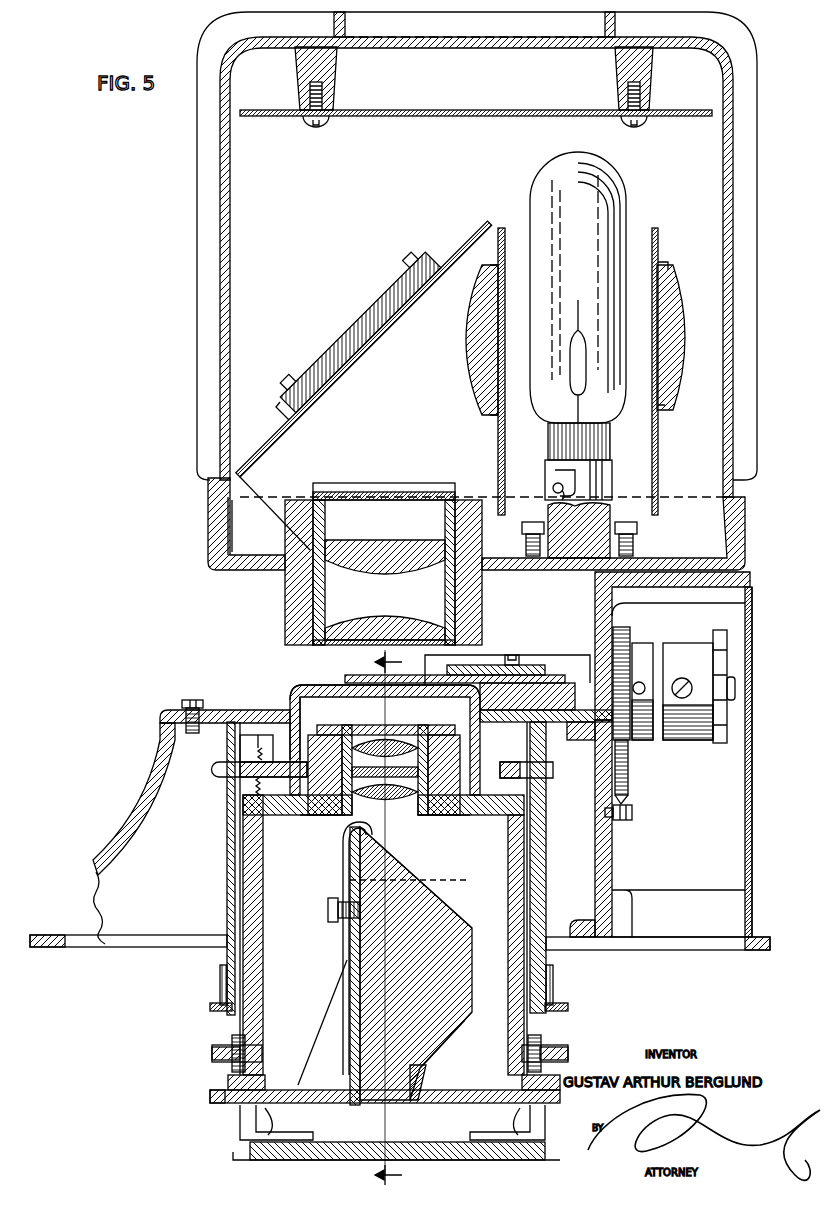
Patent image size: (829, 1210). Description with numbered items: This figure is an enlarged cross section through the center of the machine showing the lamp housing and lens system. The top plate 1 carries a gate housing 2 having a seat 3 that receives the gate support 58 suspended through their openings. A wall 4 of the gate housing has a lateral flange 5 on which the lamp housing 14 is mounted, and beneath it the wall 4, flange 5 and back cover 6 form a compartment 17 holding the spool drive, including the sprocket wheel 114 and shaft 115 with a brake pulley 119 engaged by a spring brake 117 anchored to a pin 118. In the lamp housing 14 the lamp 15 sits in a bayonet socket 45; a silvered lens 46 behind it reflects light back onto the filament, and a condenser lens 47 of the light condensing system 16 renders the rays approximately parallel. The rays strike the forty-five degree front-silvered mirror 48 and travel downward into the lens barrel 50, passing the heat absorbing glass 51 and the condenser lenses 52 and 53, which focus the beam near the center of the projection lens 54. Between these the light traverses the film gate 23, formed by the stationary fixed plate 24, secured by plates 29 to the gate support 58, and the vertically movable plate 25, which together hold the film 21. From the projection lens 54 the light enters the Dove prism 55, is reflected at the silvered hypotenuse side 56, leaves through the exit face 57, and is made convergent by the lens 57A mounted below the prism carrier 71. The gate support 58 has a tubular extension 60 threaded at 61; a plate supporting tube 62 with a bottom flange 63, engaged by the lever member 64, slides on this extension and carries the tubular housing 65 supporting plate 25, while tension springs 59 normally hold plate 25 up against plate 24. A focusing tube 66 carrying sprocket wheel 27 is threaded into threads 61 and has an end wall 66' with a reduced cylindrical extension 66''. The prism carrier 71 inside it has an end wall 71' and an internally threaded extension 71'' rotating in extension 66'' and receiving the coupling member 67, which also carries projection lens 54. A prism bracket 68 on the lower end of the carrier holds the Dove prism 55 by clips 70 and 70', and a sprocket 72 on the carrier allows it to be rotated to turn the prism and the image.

The top plate 1 is at (52, 935).
The gate housing 2 is at (160, 749).
The seat 3 is at (212, 706).
The wall 4 is at (605, 866).
The lateral flange 5 is at (706, 580).
The cover 6 is at (768, 765).
The lamp housing 14 is at (207, 243).
The lamp 15 is at (615, 192).
The light condensing system 16 is at (380, 280).
The compartment 17 is at (742, 830).
The film 21 is at (336, 676).
The film gate 23 is at (300, 672).
The stationary fixed plate 24 is at (455, 664).
The vertically movable plate 25 is at (345, 688).
The sprocket wheel 27 is at (210, 1053).
The plates 29 is at (570, 668).
The bayonet socket 45 is at (604, 482).
The silvered lens 46 is at (670, 335).
The condenser lens 47 is at (462, 375).
The mirror 48 is at (340, 350).
The lens barrel 50 is at (312, 492).
The heat absorbing glass 51 is at (412, 493).
The condenser lens 52 is at (360, 565).
The condenser lens 53 is at (418, 592).
The projection lens 54 is at (410, 820).
The Dove prism 55 is at (448, 925).
The hypotenuse side 56 is at (355, 872).
The exit face 57 is at (445, 1038).
The lens 57A is at (530, 1155).
The gate support 58 is at (205, 700).
The tension springs 59 is at (262, 755).
The tubular extension 60 is at (228, 822).
The threads 61 is at (240, 885).
The plate supporting tube 62 is at (230, 797).
The flange 63 is at (218, 1011).
The lever member 64 is at (225, 978).
The tubular housing 65 is at (290, 700).
The focusing tube 66 is at (383, 935).
The end wall 66' is at (297, 830).
The reduced cylindrical extension 66'' is at (471, 817).
The coupling member 67 is at (386, 728).
The prism bracket 68 is at (340, 990).
The clip 70 is at (415, 1100).
The clip 70' is at (340, 948).
The prism carrier 71 is at (385, 1055).
The end wall 71' is at (322, 826).
The reduced cylindrical extension 71'' is at (444, 827).
The sprocket 72 is at (224, 1105).
The sprocket wheel 114 is at (718, 748).
The shaft 115 is at (665, 735).
The spring brake 117 is at (630, 770).
The pin 118 is at (635, 812).
The brake pulley 119 is at (640, 650).